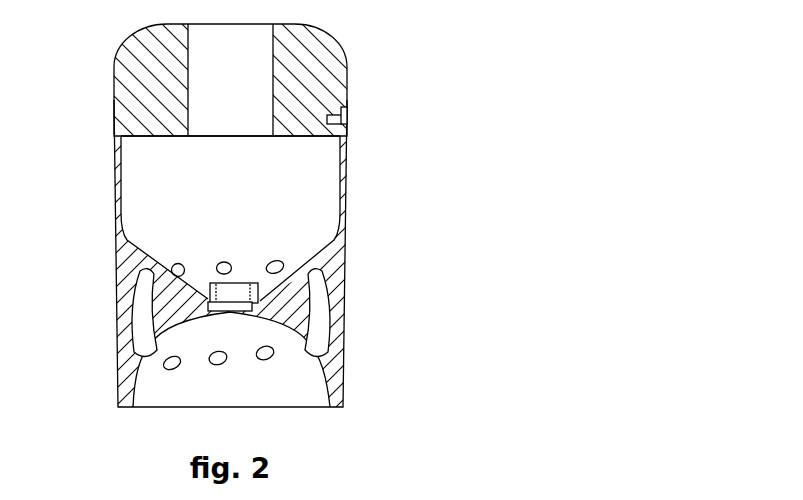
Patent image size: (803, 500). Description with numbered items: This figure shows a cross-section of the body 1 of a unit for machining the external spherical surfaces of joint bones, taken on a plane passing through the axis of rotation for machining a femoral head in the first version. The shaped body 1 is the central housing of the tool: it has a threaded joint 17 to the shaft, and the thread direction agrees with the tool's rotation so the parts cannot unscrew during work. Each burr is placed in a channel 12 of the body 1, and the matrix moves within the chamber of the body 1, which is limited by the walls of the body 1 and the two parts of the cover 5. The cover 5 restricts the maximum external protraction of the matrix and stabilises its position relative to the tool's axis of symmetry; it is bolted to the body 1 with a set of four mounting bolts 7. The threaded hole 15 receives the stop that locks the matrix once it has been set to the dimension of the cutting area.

The body 1 is at (345, 390).
The cover 5 is at (346, 66).
The mounting bolts 7 is at (345, 118).
The channel 12 is at (133, 290).
The threaded hole 15 is at (280, 350).
The threaded joint 17 is at (205, 287).